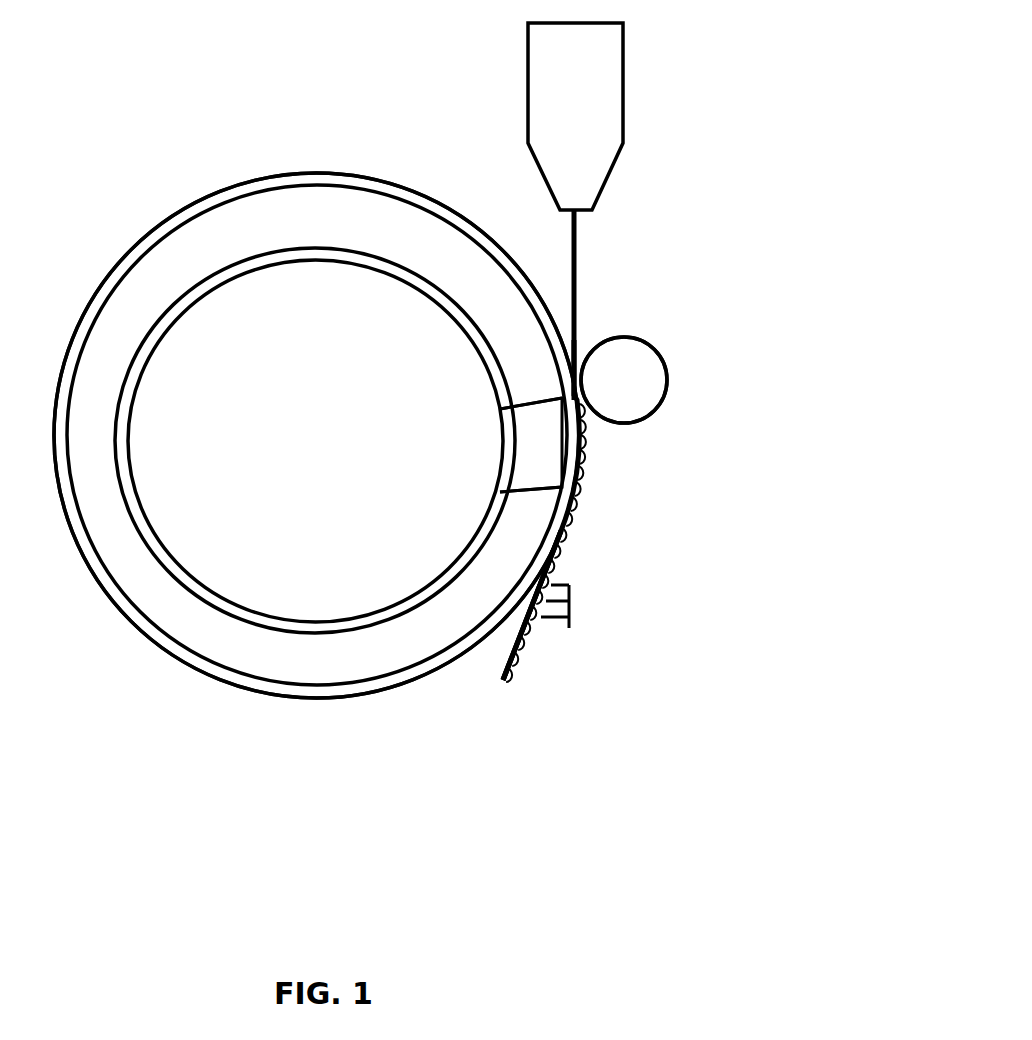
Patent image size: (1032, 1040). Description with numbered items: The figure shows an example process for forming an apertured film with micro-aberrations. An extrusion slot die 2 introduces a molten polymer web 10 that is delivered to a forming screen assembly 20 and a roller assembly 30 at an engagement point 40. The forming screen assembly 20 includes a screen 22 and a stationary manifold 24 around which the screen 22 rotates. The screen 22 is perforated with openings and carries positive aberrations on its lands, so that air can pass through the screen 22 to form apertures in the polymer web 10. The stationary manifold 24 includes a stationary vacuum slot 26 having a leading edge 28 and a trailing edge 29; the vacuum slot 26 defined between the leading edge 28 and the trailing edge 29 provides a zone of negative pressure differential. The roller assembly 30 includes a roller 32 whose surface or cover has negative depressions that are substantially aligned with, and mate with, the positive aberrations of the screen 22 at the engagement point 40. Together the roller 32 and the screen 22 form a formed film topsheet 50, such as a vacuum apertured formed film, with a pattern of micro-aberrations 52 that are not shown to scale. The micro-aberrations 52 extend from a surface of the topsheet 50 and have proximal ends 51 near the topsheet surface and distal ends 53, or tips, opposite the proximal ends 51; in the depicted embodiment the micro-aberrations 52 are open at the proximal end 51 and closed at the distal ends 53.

The extrusion slot die 2 is at (626, 72).
The molten polymer web 10 is at (575, 270).
The forming screen assembly 20 is at (184, 187).
The screen 22 is at (356, 176).
The stationary manifold 24 is at (241, 272).
The stationary vacuum slot 26 is at (543, 435).
The leading edge 28 is at (530, 397).
The trailing edge 29 is at (521, 490).
The roller assembly 30 is at (710, 371).
The roller 32 is at (641, 420).
The engagement point 40 is at (581, 342).
The formed film topsheet 50 is at (588, 565).
The proximal ends 51 is at (507, 686).
The micro-aberrations 52 is at (569, 628).
The distal ends 53 is at (524, 672).